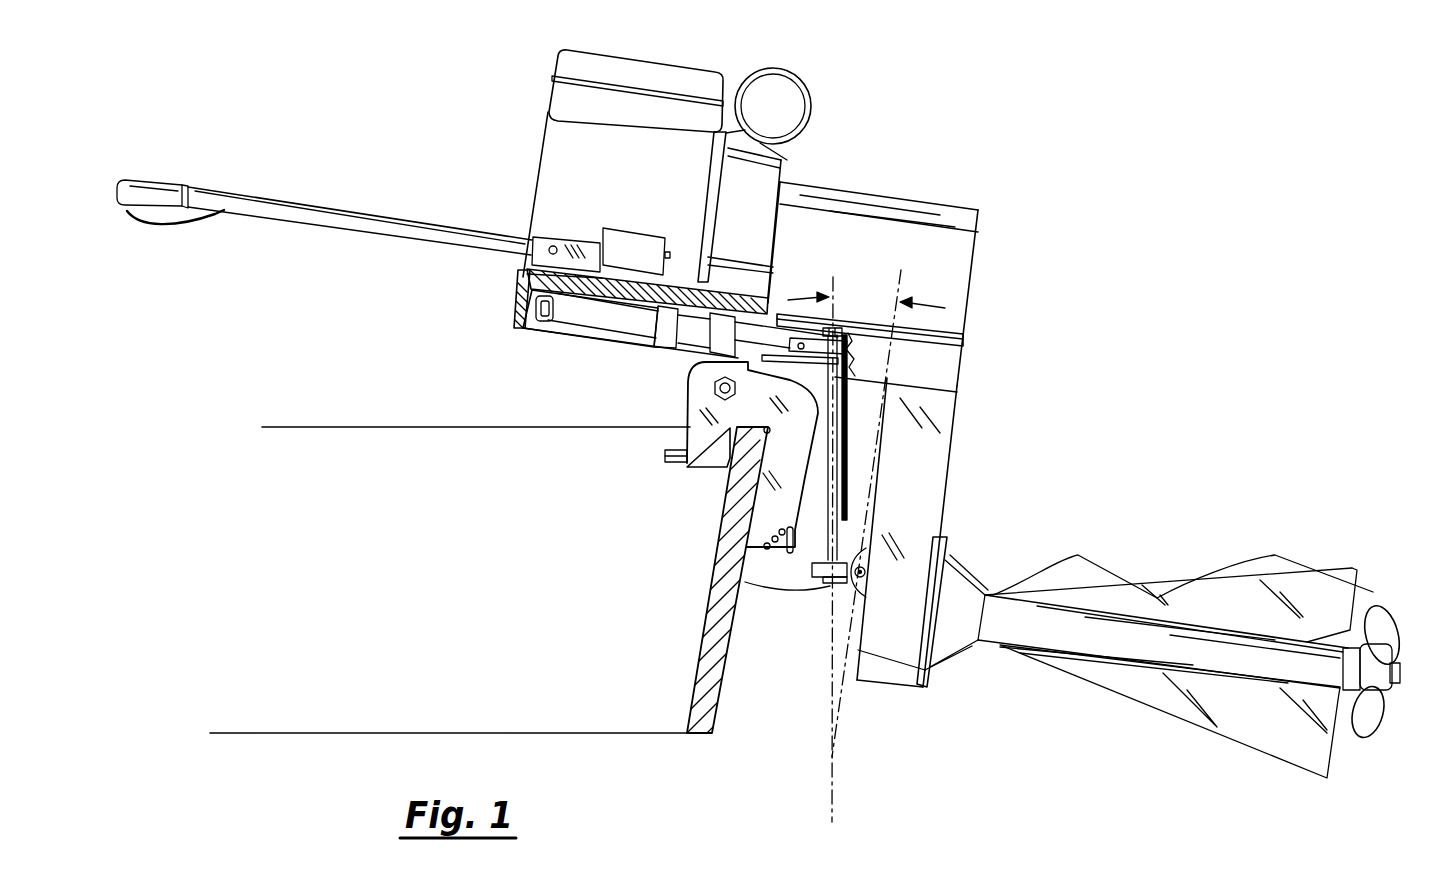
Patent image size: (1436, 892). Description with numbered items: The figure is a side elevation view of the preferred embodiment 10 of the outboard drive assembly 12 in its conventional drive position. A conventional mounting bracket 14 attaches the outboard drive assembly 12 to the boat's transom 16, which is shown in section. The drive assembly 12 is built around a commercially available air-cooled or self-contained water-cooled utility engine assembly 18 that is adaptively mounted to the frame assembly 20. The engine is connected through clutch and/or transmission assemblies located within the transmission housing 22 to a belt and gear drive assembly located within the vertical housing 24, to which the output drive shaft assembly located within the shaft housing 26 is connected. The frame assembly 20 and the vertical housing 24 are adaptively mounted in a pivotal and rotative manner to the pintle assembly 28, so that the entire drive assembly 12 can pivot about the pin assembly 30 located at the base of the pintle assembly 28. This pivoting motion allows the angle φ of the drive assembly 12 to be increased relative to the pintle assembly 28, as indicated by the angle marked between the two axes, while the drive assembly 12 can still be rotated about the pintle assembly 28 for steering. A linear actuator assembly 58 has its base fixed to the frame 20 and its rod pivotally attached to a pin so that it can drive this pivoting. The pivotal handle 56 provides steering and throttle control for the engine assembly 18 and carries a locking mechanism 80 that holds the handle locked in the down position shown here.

The preferred embodiment 10 is at (761, 436).
The outboard drive assembly 12 is at (703, 173).
The mounting bracket 14 is at (777, 470).
The transom 16 is at (718, 680).
The engine assembly 18 is at (627, 201).
The frame assembly 20 is at (508, 305).
The transmission housing 22 is at (953, 248).
The vertical housing 24 is at (918, 500).
The shaft housing 26 is at (1153, 643).
The pintle assembly 28 is at (862, 458).
The pin assembly 30 is at (848, 604).
The pivotal handle 56 is at (302, 212).
The linear actuator assembly 58 is at (605, 357).
The locking mechanism 80 is at (578, 245).